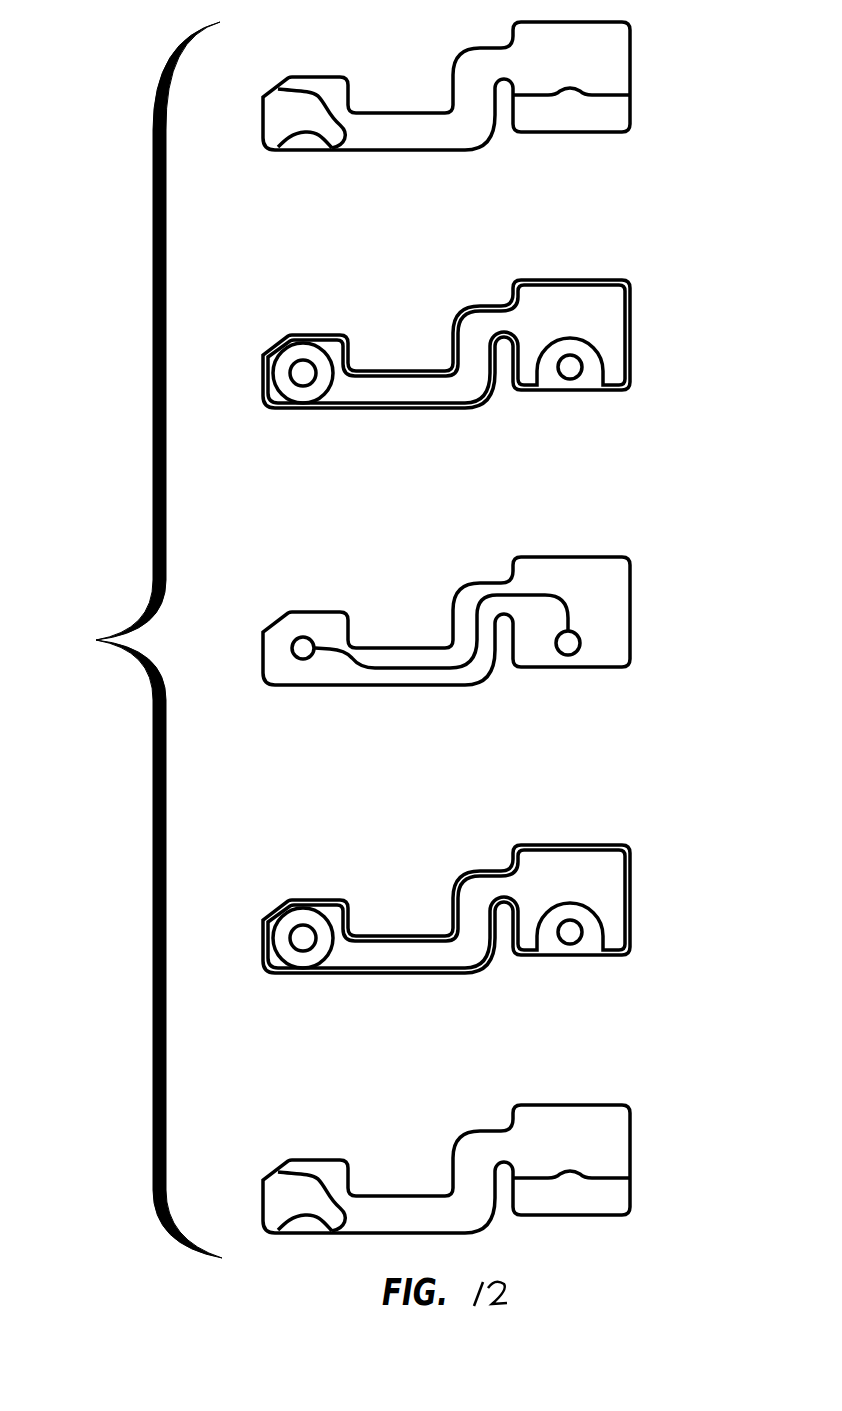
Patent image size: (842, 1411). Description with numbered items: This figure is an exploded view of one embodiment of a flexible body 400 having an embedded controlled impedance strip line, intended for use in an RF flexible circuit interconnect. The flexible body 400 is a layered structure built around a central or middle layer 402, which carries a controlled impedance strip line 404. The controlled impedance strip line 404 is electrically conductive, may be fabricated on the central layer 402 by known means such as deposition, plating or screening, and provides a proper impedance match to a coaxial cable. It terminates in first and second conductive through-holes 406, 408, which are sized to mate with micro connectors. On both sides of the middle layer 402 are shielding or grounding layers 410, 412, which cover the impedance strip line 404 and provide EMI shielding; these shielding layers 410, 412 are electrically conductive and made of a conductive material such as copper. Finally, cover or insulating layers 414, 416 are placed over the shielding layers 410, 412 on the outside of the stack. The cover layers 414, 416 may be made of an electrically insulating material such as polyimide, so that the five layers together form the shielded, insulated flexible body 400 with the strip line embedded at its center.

The flexible body 400 is at (100, 640).
The central layer 402 is at (632, 593).
The controlled impedance strip line 404 is at (432, 670).
The first conductive through-hole 406 is at (305, 659).
The second conductive through-hole 408 is at (580, 647).
The shielding layer 410 is at (632, 333).
The shielding layer 412 is at (632, 898).
The cover layer 414 is at (632, 70).
The cover layer 416 is at (632, 1153).